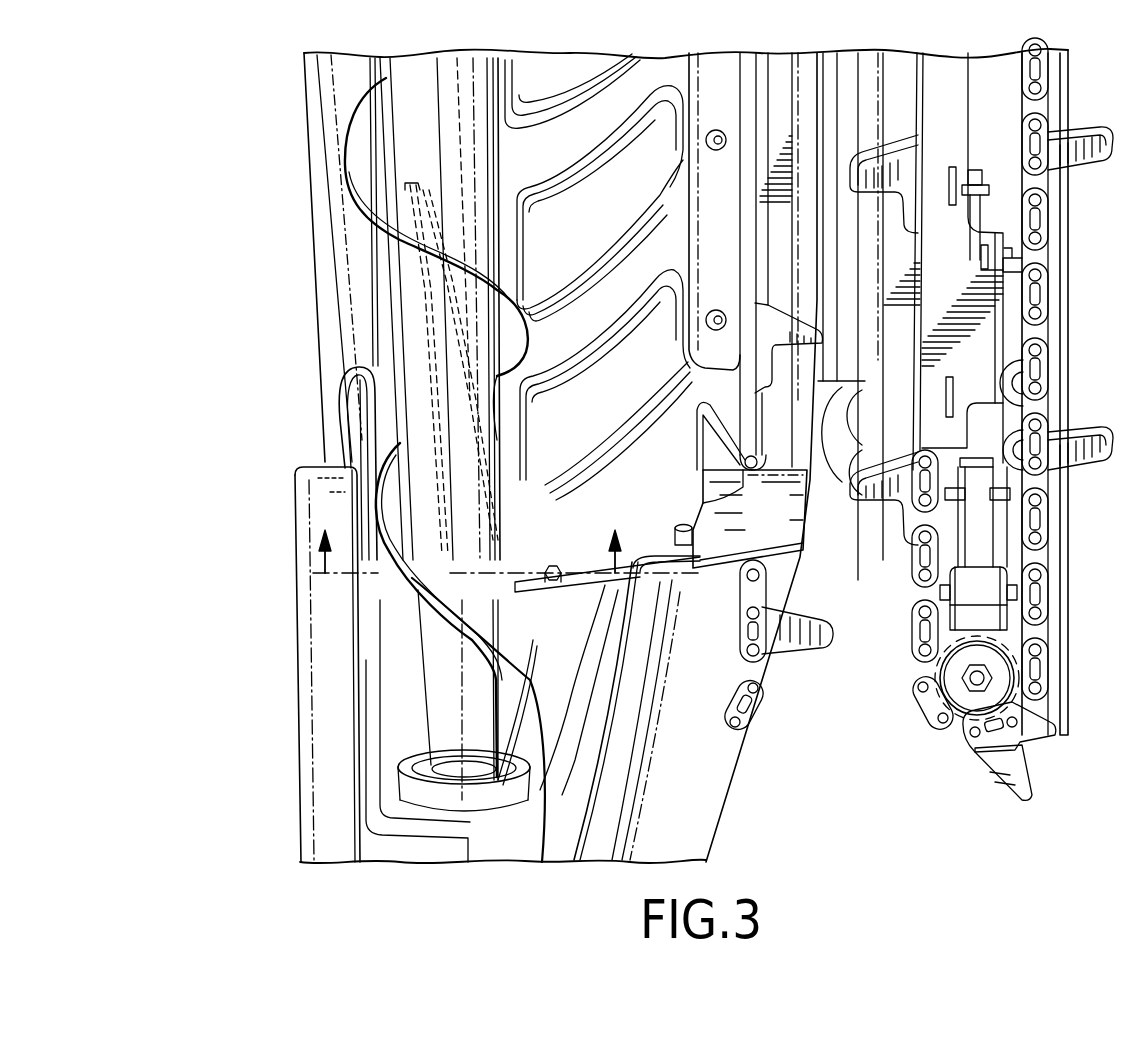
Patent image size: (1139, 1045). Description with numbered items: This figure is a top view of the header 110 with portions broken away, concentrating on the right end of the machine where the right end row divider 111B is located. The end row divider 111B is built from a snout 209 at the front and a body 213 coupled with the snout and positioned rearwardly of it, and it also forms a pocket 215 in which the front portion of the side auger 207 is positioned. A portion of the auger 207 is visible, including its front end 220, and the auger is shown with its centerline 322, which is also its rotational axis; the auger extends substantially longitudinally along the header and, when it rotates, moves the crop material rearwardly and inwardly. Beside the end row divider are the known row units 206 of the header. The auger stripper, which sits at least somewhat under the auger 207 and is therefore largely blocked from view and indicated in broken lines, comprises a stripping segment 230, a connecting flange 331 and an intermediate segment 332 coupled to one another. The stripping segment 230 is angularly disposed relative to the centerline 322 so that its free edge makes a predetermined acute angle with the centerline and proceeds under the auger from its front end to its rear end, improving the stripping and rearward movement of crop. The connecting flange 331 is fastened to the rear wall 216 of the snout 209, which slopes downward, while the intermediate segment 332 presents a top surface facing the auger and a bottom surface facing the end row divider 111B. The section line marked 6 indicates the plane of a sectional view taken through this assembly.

The header 110 is at (160, 61).
The right end row divider 111B is at (283, 259).
The body 213 is at (315, 125).
The side auger 207 is at (382, 165).
The centerline 322 is at (392, 418).
The stripping segment 230 is at (480, 425).
The intermediate segment 332 is at (478, 512).
The rear wall 216 is at (572, 628).
The snout 209 is at (690, 803).
The connecting flange 331 is at (562, 638).
The pocket 215 is at (405, 699).
The front end 220 is at (440, 733).
The row units 206 is at (917, 620).
The section line 6- 6 is at (506, 574).